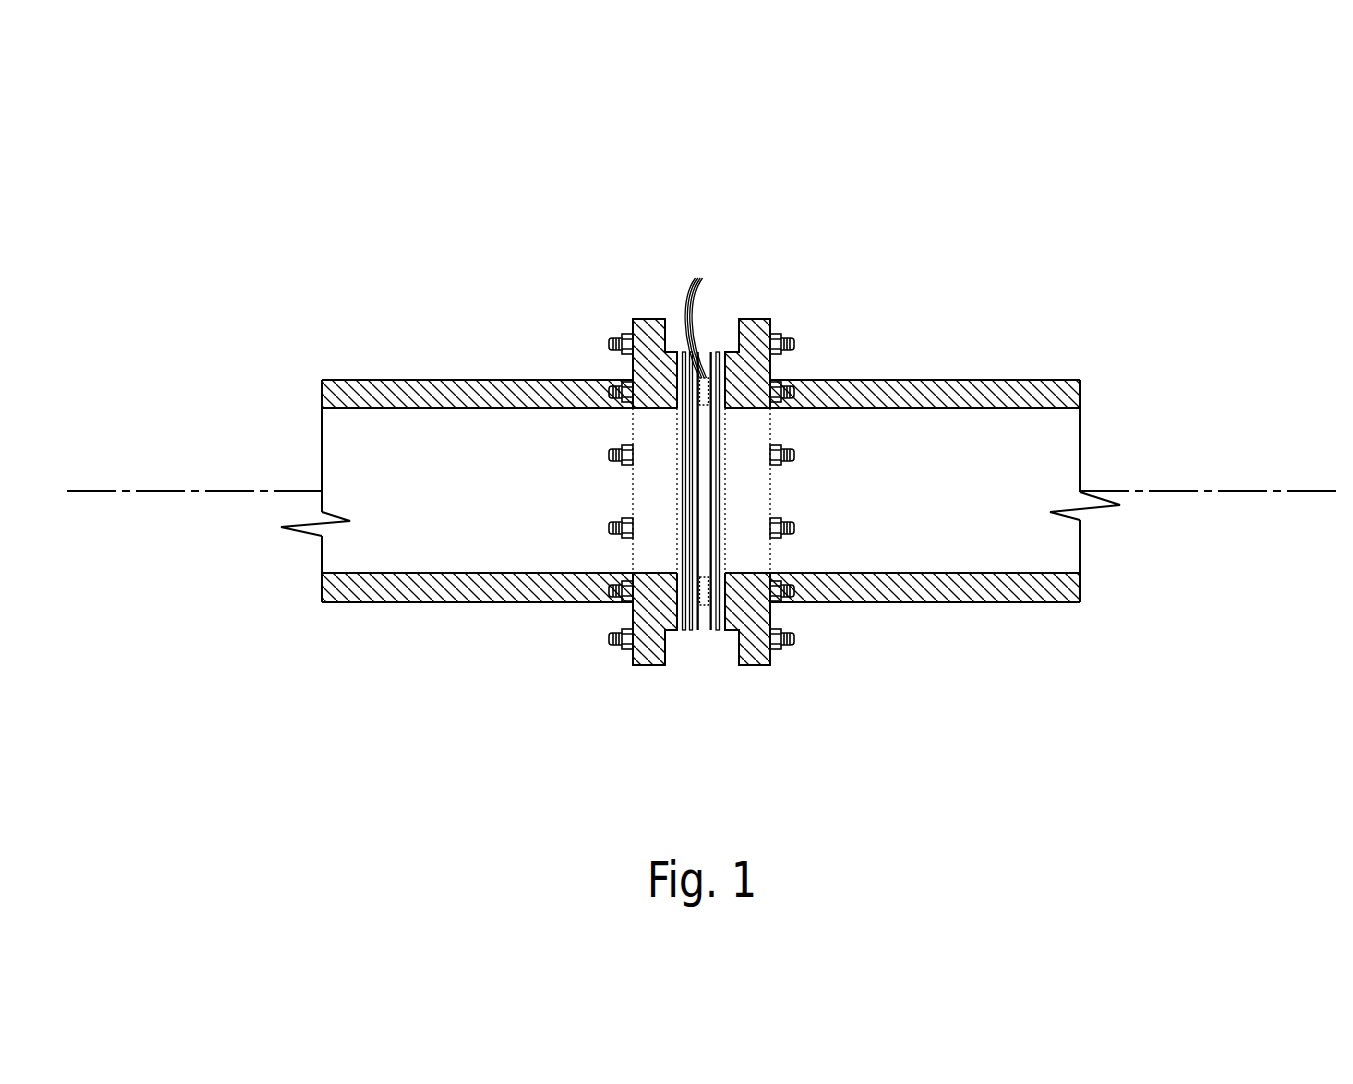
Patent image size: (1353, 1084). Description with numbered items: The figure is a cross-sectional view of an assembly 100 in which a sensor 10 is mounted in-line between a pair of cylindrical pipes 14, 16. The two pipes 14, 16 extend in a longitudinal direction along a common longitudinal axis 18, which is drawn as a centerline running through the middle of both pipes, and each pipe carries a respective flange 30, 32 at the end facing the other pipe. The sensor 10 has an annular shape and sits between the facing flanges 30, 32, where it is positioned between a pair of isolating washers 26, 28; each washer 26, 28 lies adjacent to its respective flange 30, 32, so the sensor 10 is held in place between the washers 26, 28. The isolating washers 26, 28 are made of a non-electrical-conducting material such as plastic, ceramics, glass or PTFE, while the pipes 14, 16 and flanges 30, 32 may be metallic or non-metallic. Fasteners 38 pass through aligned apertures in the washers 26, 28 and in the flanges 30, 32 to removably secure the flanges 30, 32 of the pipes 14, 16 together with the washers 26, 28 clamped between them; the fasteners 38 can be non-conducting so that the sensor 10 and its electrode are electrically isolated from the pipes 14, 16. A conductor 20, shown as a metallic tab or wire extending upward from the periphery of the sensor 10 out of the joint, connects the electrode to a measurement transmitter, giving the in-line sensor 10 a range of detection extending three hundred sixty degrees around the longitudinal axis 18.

The assembly 100 is at (233, 153).
The sensor 10 is at (698, 632).
The cylindrical pipe 14 is at (432, 380).
The cylindrical pipe 16 is at (992, 380).
The common longitudinal axis 18 is at (160, 491).
The conductor 20 is at (698, 305).
The isolating washer 26 is at (685, 632).
The isolating washer 28 is at (715, 632).
The flange 30 is at (655, 319).
The flange 32 is at (758, 319).
The fasteners 38 is at (606, 343).